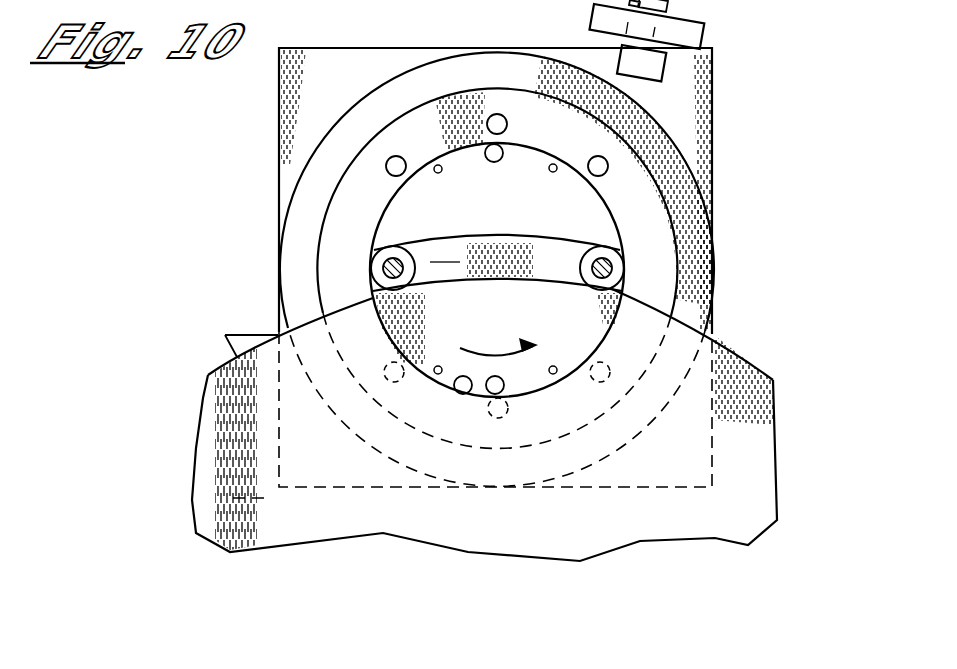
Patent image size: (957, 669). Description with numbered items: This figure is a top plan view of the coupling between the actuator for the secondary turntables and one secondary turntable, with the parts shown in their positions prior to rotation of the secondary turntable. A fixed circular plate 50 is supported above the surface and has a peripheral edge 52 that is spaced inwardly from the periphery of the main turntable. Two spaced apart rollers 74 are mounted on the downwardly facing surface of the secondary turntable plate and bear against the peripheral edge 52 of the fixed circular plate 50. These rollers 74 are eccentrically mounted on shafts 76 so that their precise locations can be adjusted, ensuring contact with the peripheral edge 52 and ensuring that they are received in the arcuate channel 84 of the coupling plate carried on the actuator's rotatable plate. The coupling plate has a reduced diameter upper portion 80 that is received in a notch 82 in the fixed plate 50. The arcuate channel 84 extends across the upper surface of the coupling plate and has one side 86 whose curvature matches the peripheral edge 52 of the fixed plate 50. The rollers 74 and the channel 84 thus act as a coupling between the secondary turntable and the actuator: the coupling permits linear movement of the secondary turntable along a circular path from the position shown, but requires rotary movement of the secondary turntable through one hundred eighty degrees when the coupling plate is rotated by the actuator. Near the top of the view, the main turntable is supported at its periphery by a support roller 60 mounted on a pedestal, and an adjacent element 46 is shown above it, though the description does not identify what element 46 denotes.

The cam lever 46 is at (705, 62).
The support roller 60 is at (655, 70).
The reduced diameter upper portion 80 is at (553, 198).
The shaft 76 is at (372, 262).
The roller 74 is at (370, 298).
The arcuate channel 84 is at (446, 263).
The side of channel 86 is at (437, 279).
The notch 82 is at (457, 382).
The fixed circular plate 50 is at (733, 440).
The peripheral edge 52 is at (745, 352).